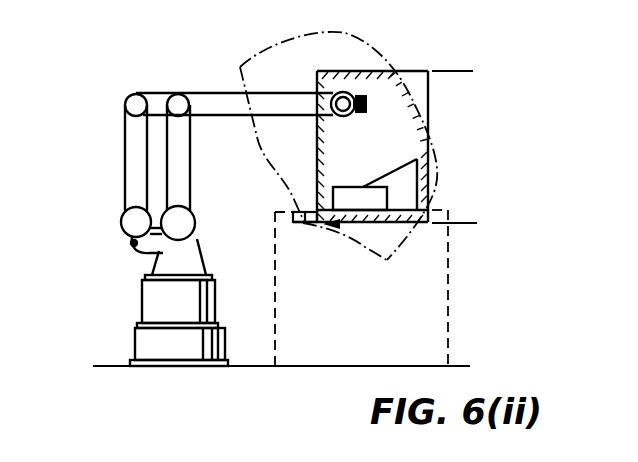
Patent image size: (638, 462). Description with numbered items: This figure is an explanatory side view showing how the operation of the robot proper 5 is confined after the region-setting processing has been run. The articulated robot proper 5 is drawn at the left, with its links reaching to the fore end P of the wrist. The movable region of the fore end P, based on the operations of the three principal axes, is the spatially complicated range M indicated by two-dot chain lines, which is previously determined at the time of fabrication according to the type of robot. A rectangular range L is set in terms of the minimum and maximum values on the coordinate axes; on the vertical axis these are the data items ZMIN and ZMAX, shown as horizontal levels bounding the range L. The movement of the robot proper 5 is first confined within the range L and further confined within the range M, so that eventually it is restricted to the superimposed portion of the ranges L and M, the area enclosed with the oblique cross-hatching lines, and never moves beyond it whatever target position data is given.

The robot proper 5 is at (139, 267).
The movable region range L is at (317, 79).
The fore end of the wrist P is at (366, 102).
The movable region range M is at (305, 232).
The maximum Z data item ZMAX is at (479, 75).
The minimum Z data item ZMIN is at (479, 225).